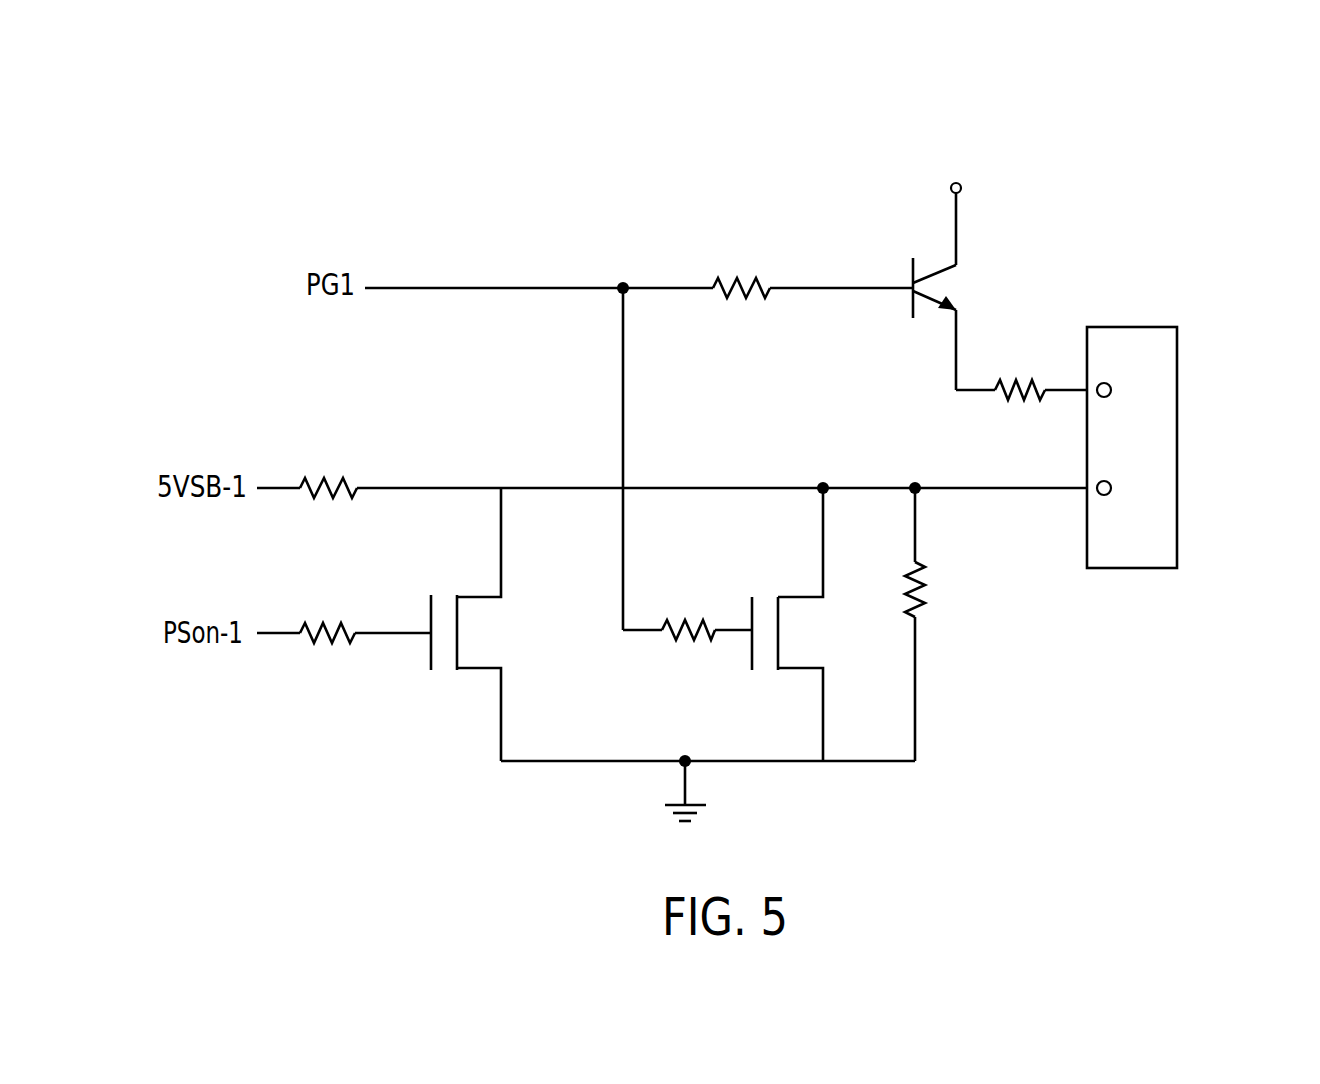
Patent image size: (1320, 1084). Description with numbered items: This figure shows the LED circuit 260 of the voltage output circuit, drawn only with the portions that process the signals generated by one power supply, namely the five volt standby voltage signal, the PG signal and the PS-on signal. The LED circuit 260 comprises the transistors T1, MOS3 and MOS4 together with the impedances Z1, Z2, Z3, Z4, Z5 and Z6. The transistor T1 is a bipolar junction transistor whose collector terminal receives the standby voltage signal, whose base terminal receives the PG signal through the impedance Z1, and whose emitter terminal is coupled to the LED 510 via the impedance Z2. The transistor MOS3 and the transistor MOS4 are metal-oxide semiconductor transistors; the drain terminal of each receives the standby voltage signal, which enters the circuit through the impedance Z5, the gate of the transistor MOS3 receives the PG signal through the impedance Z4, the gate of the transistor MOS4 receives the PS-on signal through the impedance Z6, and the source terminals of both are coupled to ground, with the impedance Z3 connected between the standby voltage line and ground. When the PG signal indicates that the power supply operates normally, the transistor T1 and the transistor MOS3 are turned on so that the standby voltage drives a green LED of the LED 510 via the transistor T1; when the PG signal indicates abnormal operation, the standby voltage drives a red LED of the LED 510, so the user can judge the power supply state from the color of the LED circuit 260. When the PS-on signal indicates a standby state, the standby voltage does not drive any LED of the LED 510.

The LED circuit 260 is at (1147, 135).
The LED 510 is at (1150, 327).
The transistor T1 is at (960, 267).
The impedance Z1 is at (741, 271).
The impedance Z2 is at (1021, 371).
The impedance Z3 is at (932, 624).
The impedance Z4 is at (707, 613).
The impedance Z5 is at (328, 470).
The impedance Z6 is at (327, 614).
The transistor MOS3 is at (775, 624).
The transistor MOS4 is at (452, 624).